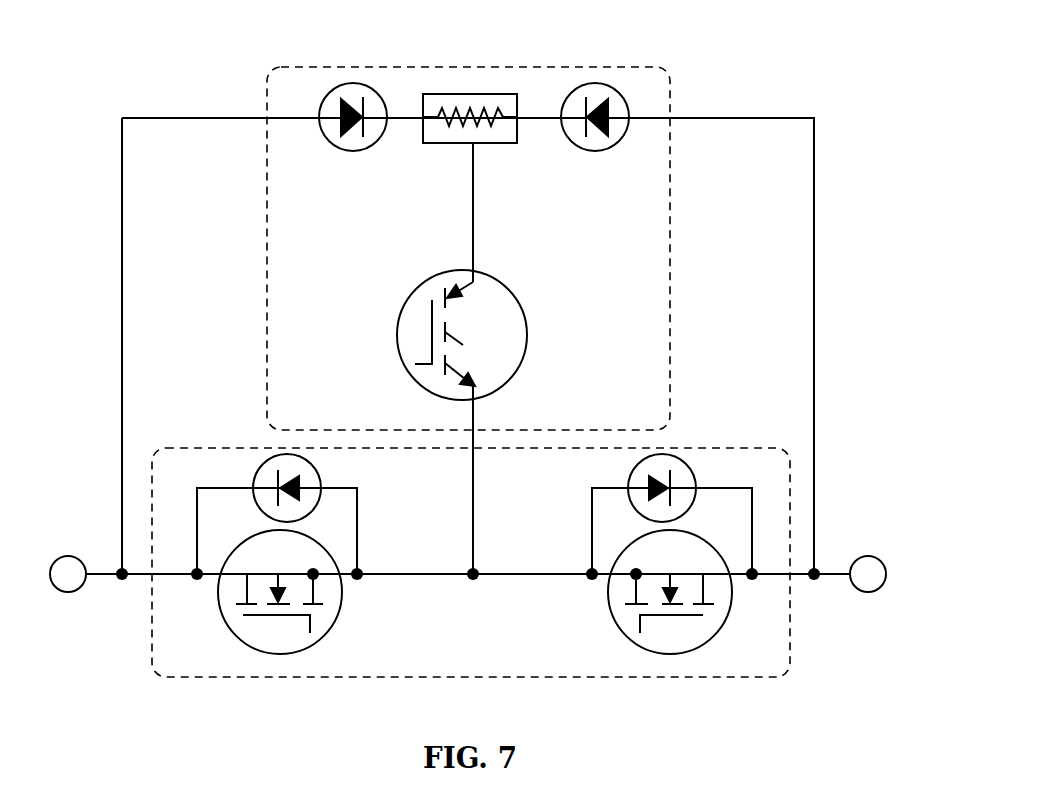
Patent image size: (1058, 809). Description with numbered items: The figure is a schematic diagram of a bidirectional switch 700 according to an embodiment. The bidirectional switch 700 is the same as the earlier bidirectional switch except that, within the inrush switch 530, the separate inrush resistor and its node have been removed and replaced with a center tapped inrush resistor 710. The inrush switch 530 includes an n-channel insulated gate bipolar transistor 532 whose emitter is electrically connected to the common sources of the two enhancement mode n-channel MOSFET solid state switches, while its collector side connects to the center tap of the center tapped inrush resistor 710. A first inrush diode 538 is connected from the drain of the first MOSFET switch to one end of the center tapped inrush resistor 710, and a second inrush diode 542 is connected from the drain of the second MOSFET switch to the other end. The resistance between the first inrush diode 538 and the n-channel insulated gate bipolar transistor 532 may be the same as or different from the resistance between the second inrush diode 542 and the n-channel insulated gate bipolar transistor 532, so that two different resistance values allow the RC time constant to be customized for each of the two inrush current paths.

The bidirectional switch 700 is at (837, 120).
The inrush switch 530 is at (663, 72).
The first inrush diode 538 is at (349, 83).
The center tapped inrush resistor 710 is at (472, 94).
The second inrush diode 542 is at (593, 83).
The n-channel insulated gate bipolar transistor 532 is at (515, 297).